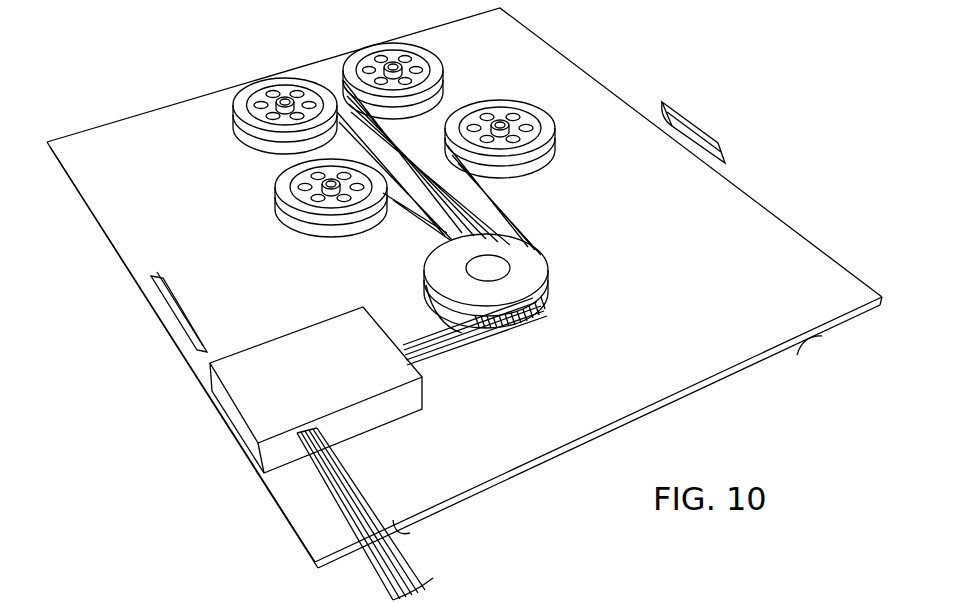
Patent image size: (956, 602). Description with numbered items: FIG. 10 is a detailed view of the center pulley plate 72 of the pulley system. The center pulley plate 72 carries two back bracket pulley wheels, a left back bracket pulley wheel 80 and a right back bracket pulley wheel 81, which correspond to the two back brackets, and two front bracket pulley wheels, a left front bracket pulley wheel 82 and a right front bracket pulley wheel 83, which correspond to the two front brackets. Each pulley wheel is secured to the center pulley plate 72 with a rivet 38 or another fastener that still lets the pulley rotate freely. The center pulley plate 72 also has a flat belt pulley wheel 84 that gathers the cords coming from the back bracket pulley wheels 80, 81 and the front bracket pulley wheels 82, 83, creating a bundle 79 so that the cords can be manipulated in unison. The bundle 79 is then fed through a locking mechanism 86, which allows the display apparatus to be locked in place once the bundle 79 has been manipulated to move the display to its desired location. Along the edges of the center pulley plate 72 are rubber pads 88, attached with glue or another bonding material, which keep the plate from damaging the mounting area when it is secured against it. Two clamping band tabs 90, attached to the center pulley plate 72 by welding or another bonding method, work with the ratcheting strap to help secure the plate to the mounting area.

The center pulley plate 72 is at (122, 143).
The rivet 38 is at (277, 100).
The bundle 79 is at (457, 347).
The left back bracket pulley wheel 80 is at (243, 97).
The right back bracket pulley wheel 81 is at (352, 64).
The left front bracket pulley wheel 82 is at (277, 199).
The right front bracket pulley wheel 83 is at (530, 107).
The flat belt pulley wheel 84 is at (523, 250).
The locking mechanism 86 is at (227, 423).
The rubber pads 88 is at (800, 354).
The clamping band tabs 90 is at (693, 120).